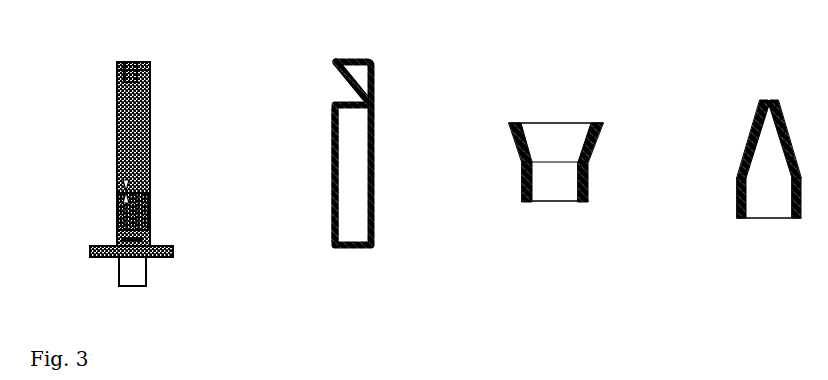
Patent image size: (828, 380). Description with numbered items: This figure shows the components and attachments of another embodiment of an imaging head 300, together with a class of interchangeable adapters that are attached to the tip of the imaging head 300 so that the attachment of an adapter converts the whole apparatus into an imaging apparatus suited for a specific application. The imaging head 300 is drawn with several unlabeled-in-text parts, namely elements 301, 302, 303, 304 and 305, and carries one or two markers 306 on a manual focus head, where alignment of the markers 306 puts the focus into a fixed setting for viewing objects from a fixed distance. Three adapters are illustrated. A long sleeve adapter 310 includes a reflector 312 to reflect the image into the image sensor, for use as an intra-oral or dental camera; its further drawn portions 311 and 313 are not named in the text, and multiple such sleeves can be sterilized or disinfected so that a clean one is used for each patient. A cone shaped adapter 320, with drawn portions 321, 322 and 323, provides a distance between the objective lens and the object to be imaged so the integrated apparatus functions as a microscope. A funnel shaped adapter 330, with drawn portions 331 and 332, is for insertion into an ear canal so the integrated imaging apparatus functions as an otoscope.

The imaging head 300 is at (178, 300).
The nozzle body 301 is at (117, 154).
The nozzle cap 302 is at (117, 66).
The cap recess 303 is at (134, 62).
The base stem 304 is at (119, 270).
The base plate 305 is at (90, 251).
The markers 306 is at (117, 193).
The long sleeve adapter 310 is at (341, 189).
The sleeve wall 311 is at (370, 202).
The reflector 312 is at (338, 80).
The inner lip 313 is at (348, 108).
The cone shaped adapter 320 is at (556, 219).
The cylindrical wall 321 is at (560, 198).
The inner shoulder 322 is at (533, 162).
The flared wall 323 is at (552, 123).
The funnel shaped adapter 330 is at (769, 267).
The cylindrical base wall 331 is at (775, 214).
The conical wall 332 is at (763, 105).